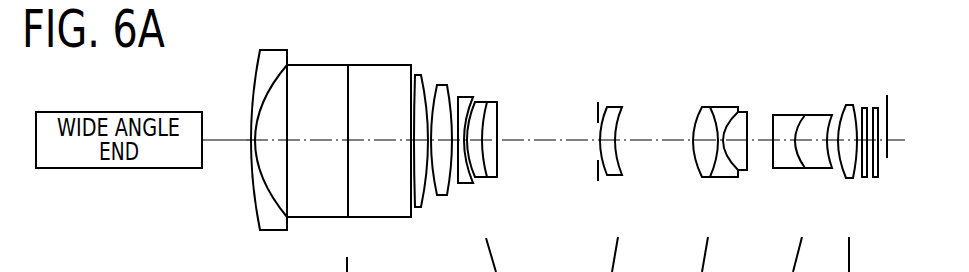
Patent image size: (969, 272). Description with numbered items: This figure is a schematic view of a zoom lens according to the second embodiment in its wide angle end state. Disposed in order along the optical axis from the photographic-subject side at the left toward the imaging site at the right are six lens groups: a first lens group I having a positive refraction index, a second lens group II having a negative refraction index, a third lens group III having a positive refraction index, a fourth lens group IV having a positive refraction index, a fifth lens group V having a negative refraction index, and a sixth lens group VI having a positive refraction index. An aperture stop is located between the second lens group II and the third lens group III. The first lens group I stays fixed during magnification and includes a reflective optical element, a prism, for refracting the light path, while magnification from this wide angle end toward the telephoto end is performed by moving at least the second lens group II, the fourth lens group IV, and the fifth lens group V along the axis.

The first lens group I is at (453, 45).
The second lens group II is at (503, 45).
The third lens group III is at (636, 45).
The fourth lens group IV is at (753, 45).
The fifth lens group V is at (830, 45).
The sixth lens group VI is at (862, 45).